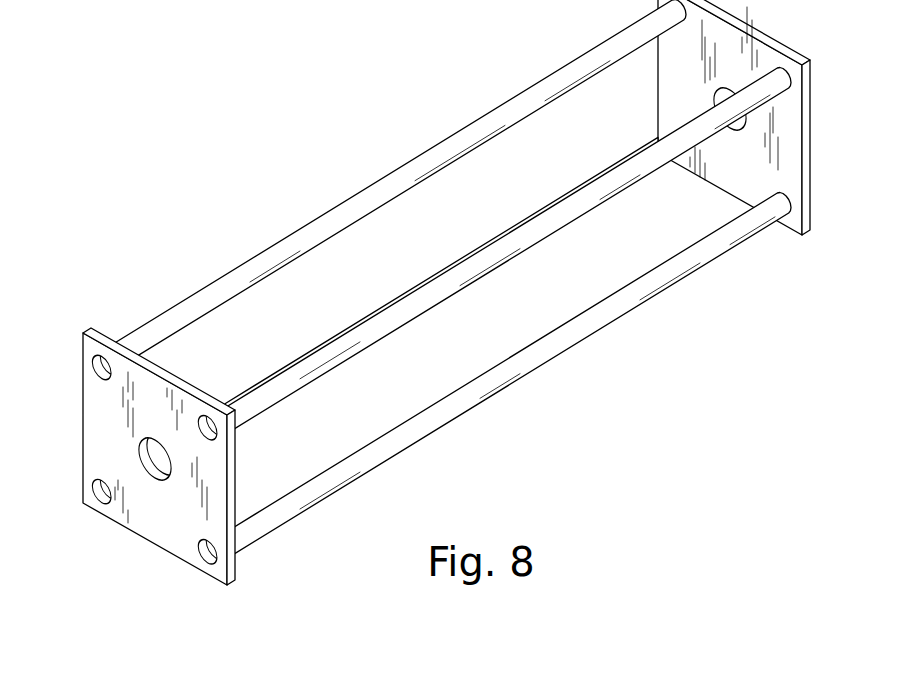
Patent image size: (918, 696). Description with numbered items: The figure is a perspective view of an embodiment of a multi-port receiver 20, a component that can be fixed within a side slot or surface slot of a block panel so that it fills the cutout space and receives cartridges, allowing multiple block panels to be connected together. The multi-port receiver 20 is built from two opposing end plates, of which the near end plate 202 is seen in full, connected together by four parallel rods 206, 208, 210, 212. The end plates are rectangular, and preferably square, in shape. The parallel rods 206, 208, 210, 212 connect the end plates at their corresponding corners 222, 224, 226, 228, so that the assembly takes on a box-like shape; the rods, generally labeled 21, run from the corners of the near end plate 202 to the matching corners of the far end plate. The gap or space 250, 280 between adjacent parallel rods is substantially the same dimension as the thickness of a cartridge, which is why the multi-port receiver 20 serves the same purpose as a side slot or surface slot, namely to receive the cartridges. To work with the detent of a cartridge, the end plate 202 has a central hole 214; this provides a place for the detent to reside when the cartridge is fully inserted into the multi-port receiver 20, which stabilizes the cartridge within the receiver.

The multi-port receiver 20 is at (74, 320).
The rod 21 is at (250, 265).
The end plate 202 is at (92, 404).
The parallel rod 206 is at (446, 150).
The parallel rod 208 is at (641, 177).
The parallel rod 210 is at (718, 258).
The parallel rod 212 is at (270, 373).
The central hole 214 is at (161, 476).
The corner 222 is at (216, 432).
The corner 224 is at (206, 563).
The corner 226 is at (99, 497).
The corner 228 is at (94, 366).
The gap 250 is at (586, 119).
The space 280 is at (540, 304).